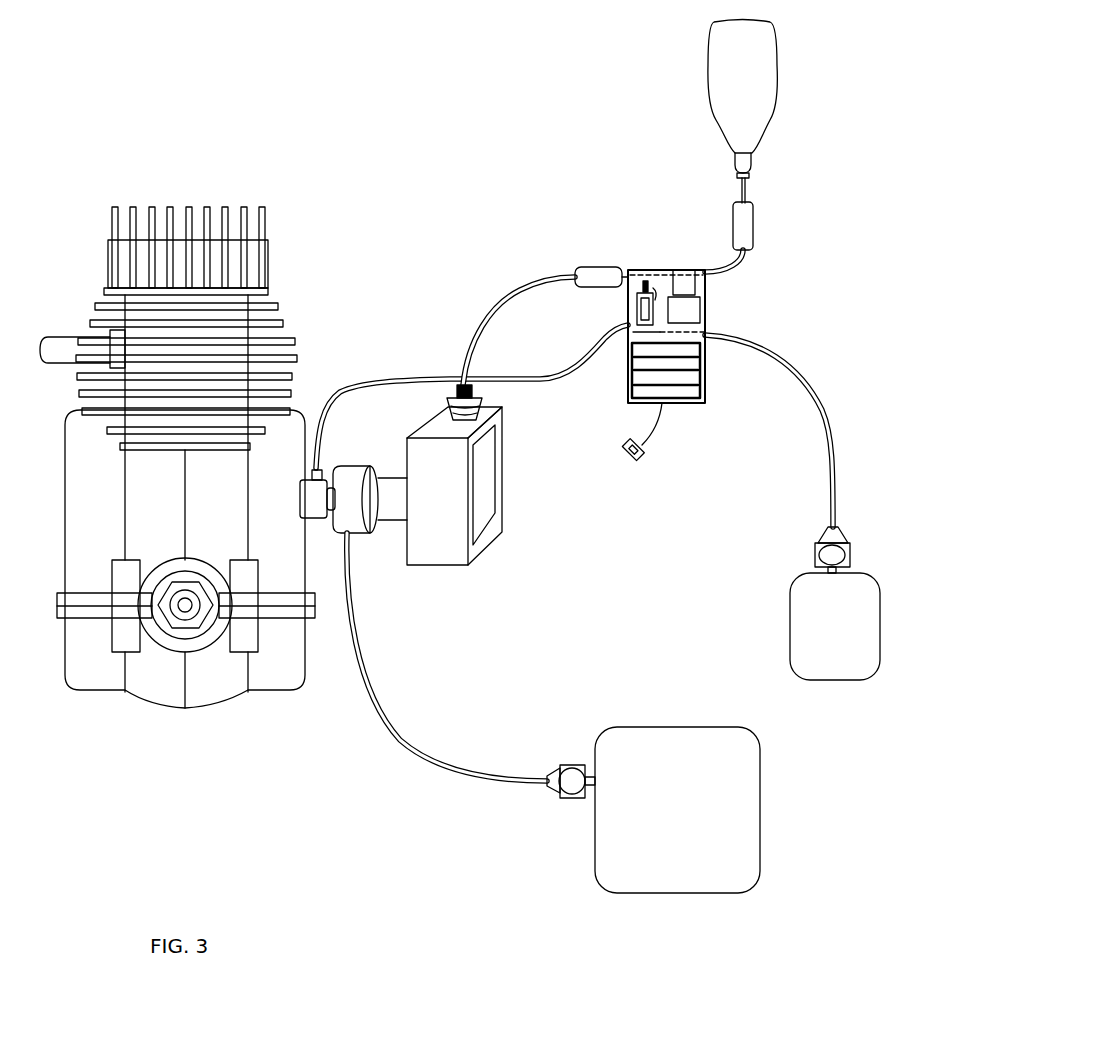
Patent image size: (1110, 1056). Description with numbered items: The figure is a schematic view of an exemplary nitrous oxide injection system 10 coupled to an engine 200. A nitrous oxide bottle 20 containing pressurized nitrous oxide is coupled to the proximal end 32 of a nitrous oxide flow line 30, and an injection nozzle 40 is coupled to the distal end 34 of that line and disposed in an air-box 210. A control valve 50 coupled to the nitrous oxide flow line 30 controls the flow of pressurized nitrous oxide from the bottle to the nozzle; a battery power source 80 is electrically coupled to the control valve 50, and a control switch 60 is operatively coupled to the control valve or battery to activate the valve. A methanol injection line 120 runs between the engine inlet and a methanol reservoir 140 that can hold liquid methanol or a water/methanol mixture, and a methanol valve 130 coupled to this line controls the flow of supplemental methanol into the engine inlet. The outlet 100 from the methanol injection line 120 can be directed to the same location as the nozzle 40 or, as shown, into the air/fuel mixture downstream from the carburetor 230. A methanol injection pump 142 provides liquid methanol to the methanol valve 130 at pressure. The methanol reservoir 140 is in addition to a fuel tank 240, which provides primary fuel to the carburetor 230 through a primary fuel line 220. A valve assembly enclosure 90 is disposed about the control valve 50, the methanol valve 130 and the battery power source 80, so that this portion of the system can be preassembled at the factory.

The nitrous oxide injection system 10 is at (607, 135).
The nitrous oxide bottle 20 is at (703, 85).
The nitrous oxide flow line 30 is at (745, 270).
The proximal end 32 is at (749, 184).
The distal end 34 is at (470, 388).
The injection nozzle 40 is at (478, 405).
The control valve 50 is at (703, 306).
The control switch 60 is at (628, 462).
The battery power source 80 is at (686, 393).
The valve assembly enclosure 90 is at (670, 268).
The outlet 100 is at (318, 466).
The methanol injection line 120 is at (362, 380).
The methanol valve 130 is at (628, 302).
The methanol reservoir 140 is at (790, 612).
The methanol injection pump 142 is at (815, 555).
The engine 200 is at (176, 165).
The air-box 210 is at (503, 515).
The primary fuel line 220 is at (462, 768).
The carburetor 230 is at (363, 533).
The fuel tank 240 is at (593, 878).